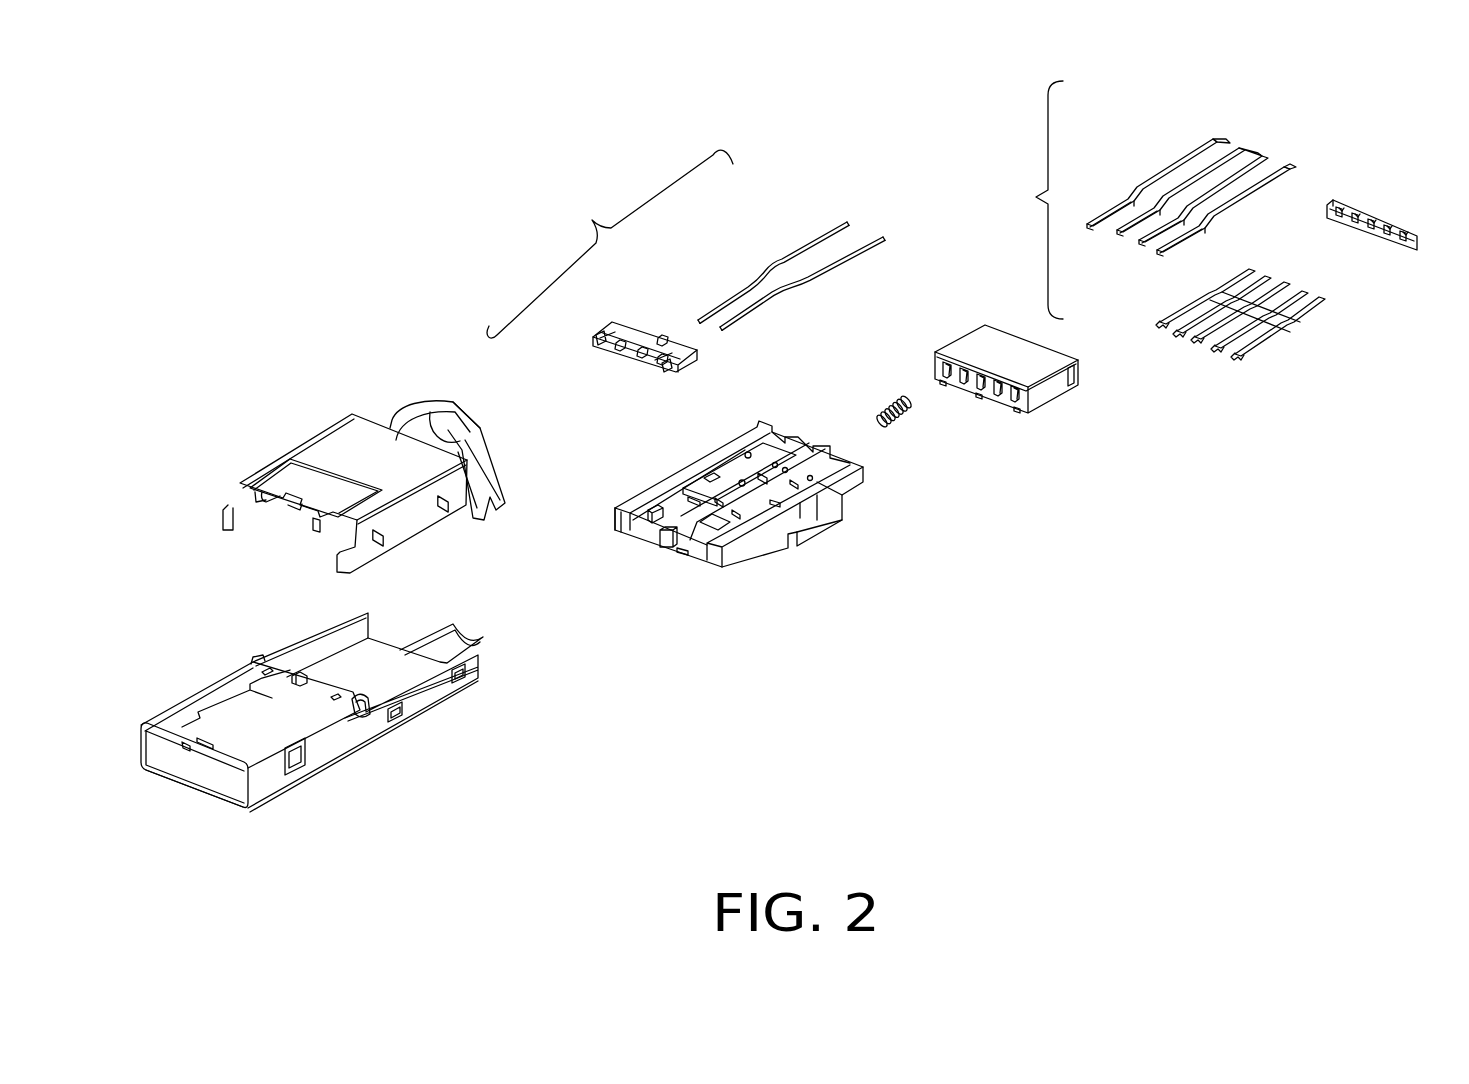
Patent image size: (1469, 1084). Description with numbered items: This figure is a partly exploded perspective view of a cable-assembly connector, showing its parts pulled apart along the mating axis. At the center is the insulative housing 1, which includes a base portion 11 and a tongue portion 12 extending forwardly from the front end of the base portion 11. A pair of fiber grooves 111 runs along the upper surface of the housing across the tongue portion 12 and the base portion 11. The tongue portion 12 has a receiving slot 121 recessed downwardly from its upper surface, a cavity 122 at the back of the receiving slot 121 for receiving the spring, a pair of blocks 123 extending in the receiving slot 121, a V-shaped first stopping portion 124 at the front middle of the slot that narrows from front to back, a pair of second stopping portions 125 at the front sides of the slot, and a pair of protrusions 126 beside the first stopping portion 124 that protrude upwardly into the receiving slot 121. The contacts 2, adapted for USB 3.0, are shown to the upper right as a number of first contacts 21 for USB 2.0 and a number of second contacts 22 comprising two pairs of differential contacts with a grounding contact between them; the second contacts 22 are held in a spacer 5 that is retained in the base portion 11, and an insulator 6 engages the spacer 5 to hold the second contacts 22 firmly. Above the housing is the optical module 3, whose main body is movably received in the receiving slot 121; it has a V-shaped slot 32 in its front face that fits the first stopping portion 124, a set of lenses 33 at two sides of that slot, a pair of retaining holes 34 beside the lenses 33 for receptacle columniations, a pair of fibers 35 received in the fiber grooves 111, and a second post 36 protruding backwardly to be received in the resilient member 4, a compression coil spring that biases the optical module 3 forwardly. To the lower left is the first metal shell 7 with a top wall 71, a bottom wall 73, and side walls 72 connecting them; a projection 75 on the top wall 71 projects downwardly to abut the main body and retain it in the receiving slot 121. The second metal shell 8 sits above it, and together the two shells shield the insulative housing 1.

The insulative housing 1 is at (648, 477).
The base portion 11 is at (810, 525).
The fiber grooves 111 is at (713, 477).
The tongue portion 12 is at (755, 542).
The receiving slot 121 is at (673, 515).
The cavity 122 is at (715, 505).
The blocks 123 is at (652, 515).
The first stopping portion 124 is at (667, 537).
The second stopping portions 125 is at (617, 517).
The protrusions 126 is at (686, 548).
The contacts 2 is at (1036, 197).
The first contacts 21 is at (1160, 290).
The second contacts 22 is at (1157, 152).
The optical module 3 is at (686, 293).
The V-shaped slot 32 is at (633, 355).
The lenses 33 is at (623, 352).
The retaining holes 34 is at (608, 340).
The fibers 35 is at (772, 245).
The second post 36 is at (662, 337).
The resilient member 4 is at (877, 396).
The spacer 5 is at (957, 326).
The insulator 6 is at (1380, 210).
The first metal shell 7 is at (228, 661).
The top wall 71 is at (215, 698).
The side walls 72 is at (333, 738).
The bottom wall 73 is at (205, 797).
The projection 75 is at (190, 748).
The second metal shell 8 is at (285, 441).